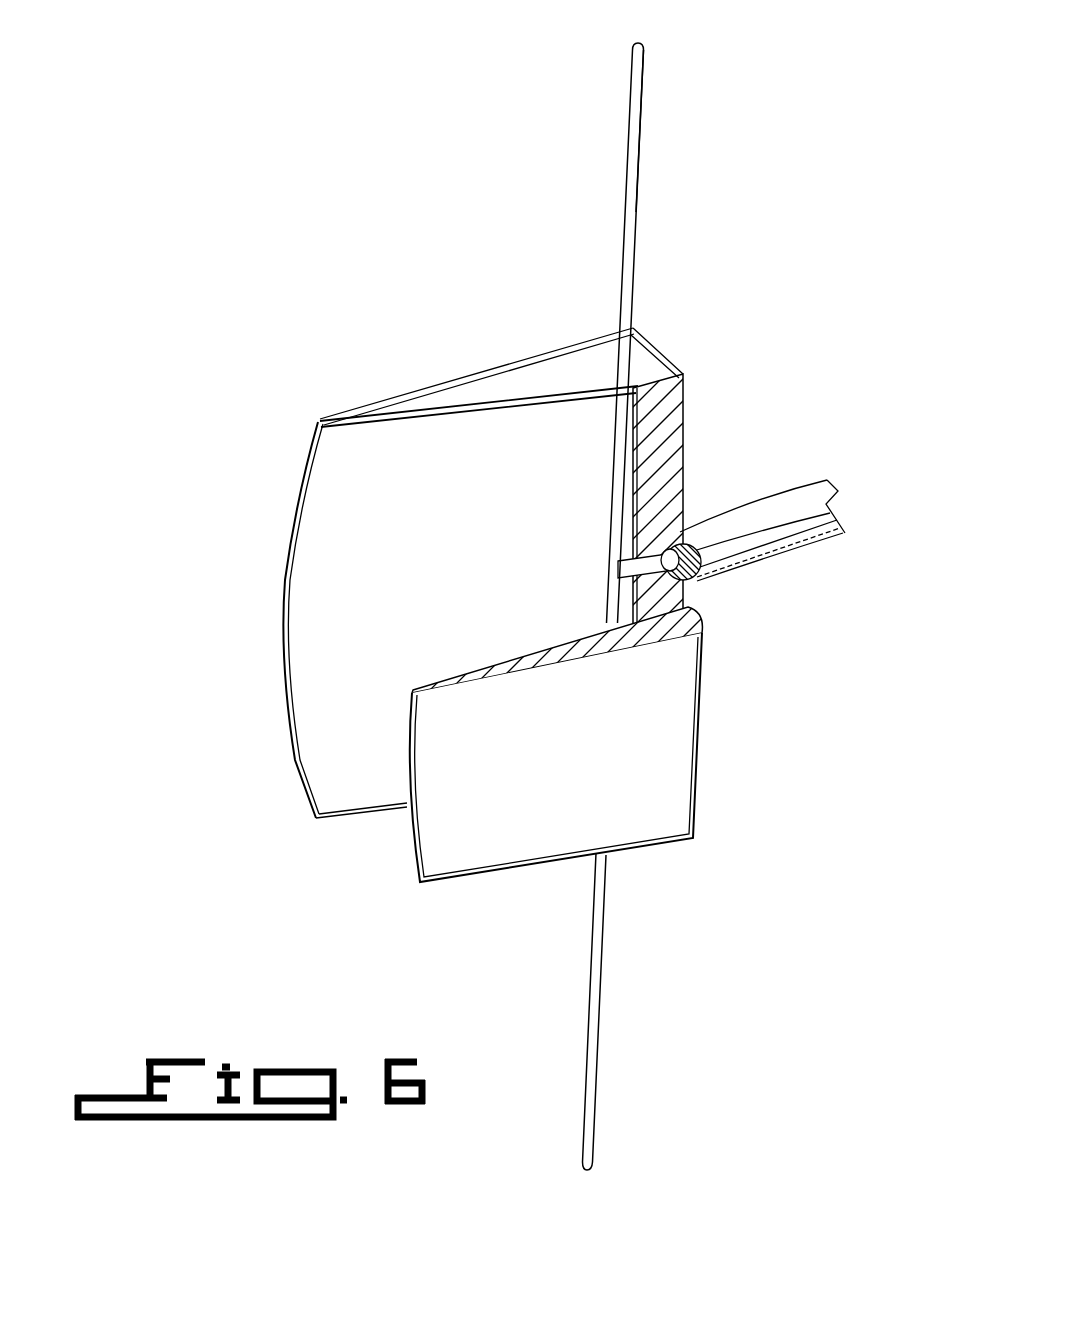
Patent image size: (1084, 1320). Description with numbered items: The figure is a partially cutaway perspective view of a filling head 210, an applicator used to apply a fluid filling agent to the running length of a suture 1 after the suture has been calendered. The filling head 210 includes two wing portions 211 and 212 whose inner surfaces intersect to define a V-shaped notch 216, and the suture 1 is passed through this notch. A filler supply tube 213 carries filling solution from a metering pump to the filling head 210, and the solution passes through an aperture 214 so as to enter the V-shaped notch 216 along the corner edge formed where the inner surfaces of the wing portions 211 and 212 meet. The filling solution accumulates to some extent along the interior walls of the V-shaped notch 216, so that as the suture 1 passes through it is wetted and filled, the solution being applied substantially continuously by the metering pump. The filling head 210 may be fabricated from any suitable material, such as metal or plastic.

The suture 1 is at (640, 117).
The filling head 210 is at (661, 591).
The wing portion 211 is at (388, 505).
The wing portion 212 is at (573, 788).
The filler supply tube 213 is at (845, 533).
The aperture 214 is at (658, 548).
The V-shaped notch 216 is at (330, 612).